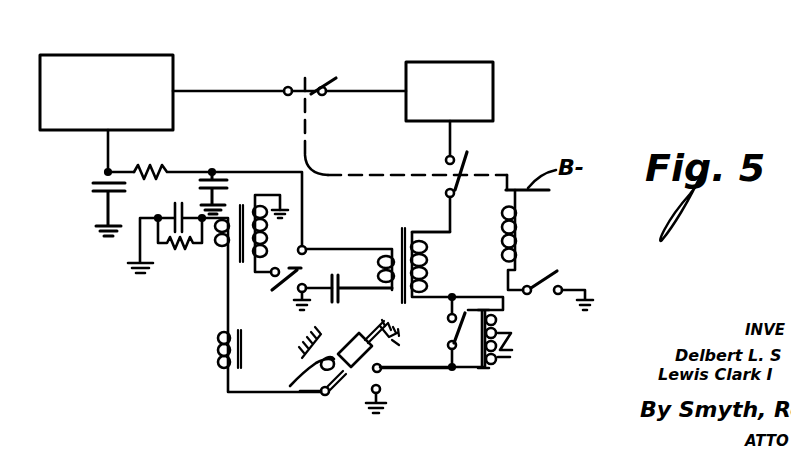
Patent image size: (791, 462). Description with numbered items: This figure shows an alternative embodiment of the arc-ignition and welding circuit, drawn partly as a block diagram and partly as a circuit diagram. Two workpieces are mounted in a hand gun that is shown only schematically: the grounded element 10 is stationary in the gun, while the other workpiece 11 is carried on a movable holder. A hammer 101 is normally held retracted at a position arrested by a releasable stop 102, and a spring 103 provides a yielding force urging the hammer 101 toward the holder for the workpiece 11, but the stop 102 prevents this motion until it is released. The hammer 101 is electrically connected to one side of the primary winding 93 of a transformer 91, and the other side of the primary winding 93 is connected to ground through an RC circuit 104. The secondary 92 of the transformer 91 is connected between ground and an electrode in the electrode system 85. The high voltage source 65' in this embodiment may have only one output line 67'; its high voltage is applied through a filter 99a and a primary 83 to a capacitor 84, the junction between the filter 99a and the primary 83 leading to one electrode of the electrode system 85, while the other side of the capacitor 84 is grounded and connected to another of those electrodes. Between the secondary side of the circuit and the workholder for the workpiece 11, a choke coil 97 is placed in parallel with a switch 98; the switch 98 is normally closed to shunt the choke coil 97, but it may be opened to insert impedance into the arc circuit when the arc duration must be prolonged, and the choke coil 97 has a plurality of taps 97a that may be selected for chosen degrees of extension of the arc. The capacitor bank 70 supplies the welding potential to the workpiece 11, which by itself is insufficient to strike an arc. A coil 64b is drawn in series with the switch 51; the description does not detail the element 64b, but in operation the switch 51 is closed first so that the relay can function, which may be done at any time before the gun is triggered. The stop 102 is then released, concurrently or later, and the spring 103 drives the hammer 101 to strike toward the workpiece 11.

The high voltage source 65' is at (135, 80).
The output line 67' is at (85, 153).
The bank 70 is at (495, 69).
The primary 83 is at (432, 176).
The filter 99a is at (186, 194).
The RC circuit 104 is at (186, 260).
The primary winding 93 is at (226, 240).
The secondary 92 is at (286, 244).
The transformer 91 is at (283, 242).
The electrode system 85 is at (263, 287).
The capacitor 84 is at (344, 272).
The relay coil 64b is at (518, 188).
The switch 51 is at (548, 278).
The switch 98 is at (449, 329).
The choke coil 97 is at (484, 342).
The taps 97a is at (512, 350).
The hammer 101 is at (362, 326).
The releasable stop 102 is at (386, 338).
The spring 103 is at (315, 368).
The grounded element 10 is at (372, 393).
The workpiece 11 is at (380, 372).